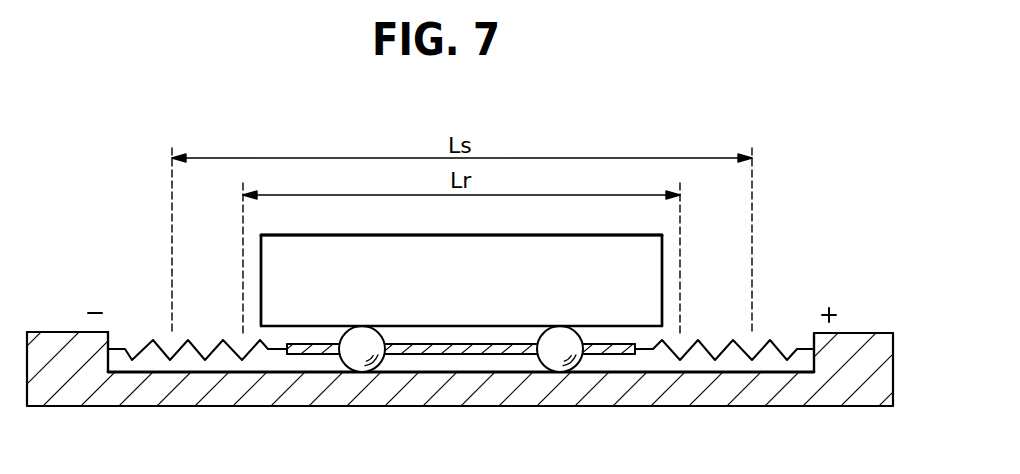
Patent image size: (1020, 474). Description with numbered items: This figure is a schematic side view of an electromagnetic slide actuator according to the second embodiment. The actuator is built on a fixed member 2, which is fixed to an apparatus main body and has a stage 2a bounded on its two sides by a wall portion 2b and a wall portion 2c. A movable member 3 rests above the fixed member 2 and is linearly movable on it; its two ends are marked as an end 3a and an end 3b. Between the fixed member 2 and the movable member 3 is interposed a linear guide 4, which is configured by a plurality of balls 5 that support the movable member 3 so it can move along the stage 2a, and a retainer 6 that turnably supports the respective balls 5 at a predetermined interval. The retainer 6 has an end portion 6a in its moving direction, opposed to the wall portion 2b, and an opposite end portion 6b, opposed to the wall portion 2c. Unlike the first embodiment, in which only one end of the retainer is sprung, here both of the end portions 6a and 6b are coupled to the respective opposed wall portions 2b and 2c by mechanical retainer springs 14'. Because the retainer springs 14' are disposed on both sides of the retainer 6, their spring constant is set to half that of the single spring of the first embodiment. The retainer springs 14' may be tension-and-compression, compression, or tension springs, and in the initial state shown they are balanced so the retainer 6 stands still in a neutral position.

The fixed member 2 is at (732, 407).
The stage 2a is at (592, 372).
The wall portion 2b is at (813, 366).
The wall portion 2c is at (108, 362).
The movable member 3 is at (598, 236).
The right end of movable body 3a is at (662, 247).
The left end of movable body 3b is at (261, 253).
The linear guide 4 is at (461, 316).
The balls 5 is at (552, 297).
The retainer 6 is at (480, 344).
The end portion 6a is at (636, 347).
The end portion 6b is at (286, 345).
The retainer springs 14' is at (461, 398).